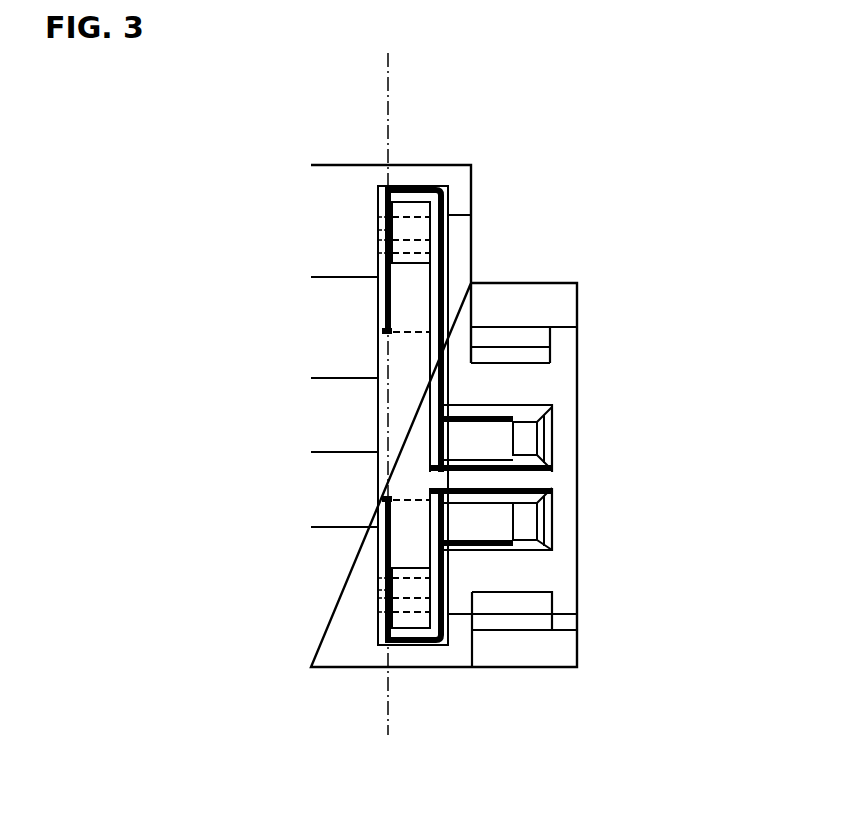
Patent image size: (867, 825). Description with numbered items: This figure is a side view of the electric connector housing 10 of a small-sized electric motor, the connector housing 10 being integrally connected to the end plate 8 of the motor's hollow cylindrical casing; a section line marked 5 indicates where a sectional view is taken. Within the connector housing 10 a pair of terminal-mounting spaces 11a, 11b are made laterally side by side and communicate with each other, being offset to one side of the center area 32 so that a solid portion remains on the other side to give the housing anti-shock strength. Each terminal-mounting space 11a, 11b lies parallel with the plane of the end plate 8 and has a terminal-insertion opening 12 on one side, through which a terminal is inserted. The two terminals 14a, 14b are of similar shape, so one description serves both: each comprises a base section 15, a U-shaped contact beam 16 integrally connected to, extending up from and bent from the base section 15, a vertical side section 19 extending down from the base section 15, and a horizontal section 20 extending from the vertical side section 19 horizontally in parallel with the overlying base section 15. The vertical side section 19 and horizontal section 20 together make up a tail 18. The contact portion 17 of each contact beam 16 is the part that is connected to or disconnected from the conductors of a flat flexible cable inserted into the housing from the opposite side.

The rectifier 5 is at (392, 63).
The end plate 8 is at (340, 622).
The connector housing 10 is at (412, 318).
The terminal-mounting space 11a is at (455, 518).
The terminal-mounting space 11b is at (455, 434).
The terminal-insertion opening 12 is at (455, 447).
The terminal 14a is at (535, 528).
The terminal 14b is at (535, 440).
The base section 15 is at (447, 376).
The U-shaped contact beam 16 is at (497, 414).
The contact portion 17 is at (520, 450).
The tail 18 is at (253, 112).
The vertical side section 19 is at (403, 198).
The horizontal section 20 is at (382, 272).
The center area 32 is at (577, 422).